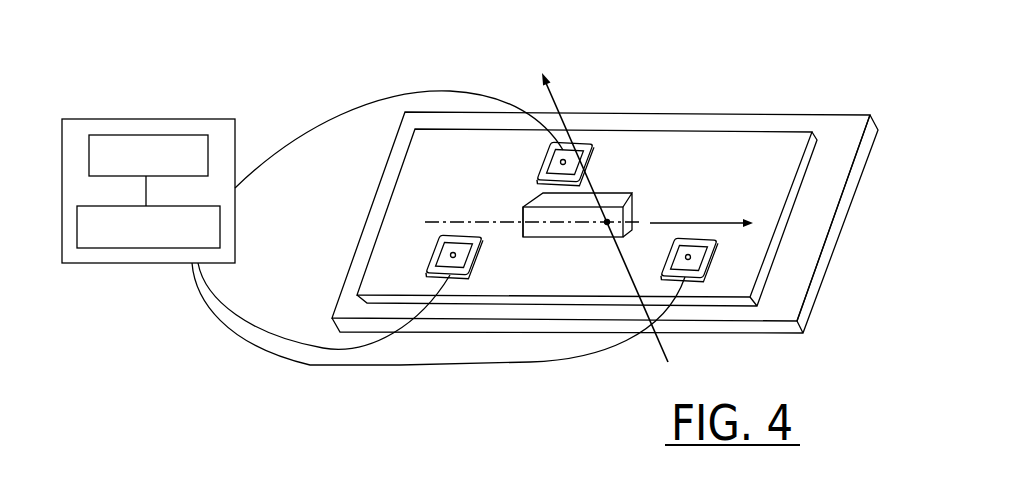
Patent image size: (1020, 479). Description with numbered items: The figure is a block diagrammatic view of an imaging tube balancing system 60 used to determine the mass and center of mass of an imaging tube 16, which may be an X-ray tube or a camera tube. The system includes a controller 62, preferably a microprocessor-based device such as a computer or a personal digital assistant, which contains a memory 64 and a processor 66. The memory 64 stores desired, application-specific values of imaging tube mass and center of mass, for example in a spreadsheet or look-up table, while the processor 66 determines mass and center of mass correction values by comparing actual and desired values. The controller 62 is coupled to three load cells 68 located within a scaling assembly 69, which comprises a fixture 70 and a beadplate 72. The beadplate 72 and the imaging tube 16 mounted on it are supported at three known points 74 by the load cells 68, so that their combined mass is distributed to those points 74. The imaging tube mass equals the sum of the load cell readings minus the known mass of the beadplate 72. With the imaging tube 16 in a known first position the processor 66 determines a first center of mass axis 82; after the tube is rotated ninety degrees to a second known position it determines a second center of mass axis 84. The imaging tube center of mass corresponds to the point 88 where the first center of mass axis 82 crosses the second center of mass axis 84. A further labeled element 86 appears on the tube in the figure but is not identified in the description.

The imaging tube 16 is at (634, 200).
The imaging tube balancing system 60 is at (613, 197).
The controller 62 is at (237, 138).
The memory 64 is at (147, 135).
The processor 66 is at (150, 248).
The load cell 68 is at (560, 162).
The scaling assembly 69 is at (843, 217).
The fixture 70 is at (805, 317).
The beadplate 72 is at (808, 163).
The known points 74 is at (586, 153).
The first center of mass axis 82 is at (556, 103).
The second center of mass axis 84 is at (700, 222).
The object face 86 is at (523, 213).
The center of mass point 88 is at (605, 224).